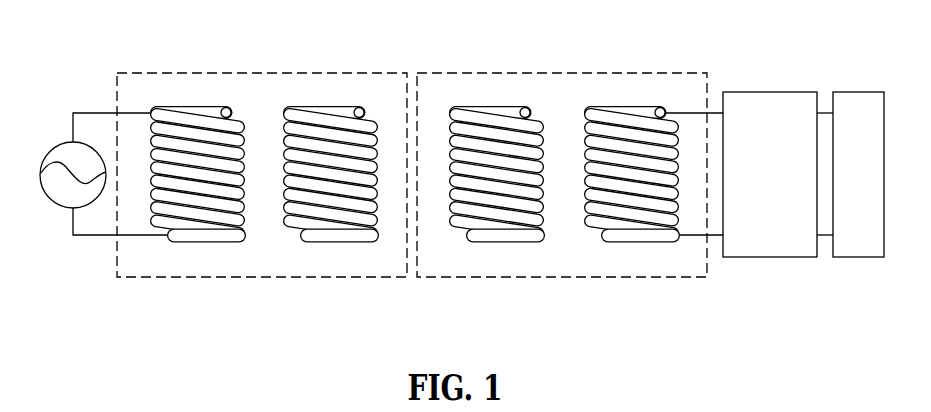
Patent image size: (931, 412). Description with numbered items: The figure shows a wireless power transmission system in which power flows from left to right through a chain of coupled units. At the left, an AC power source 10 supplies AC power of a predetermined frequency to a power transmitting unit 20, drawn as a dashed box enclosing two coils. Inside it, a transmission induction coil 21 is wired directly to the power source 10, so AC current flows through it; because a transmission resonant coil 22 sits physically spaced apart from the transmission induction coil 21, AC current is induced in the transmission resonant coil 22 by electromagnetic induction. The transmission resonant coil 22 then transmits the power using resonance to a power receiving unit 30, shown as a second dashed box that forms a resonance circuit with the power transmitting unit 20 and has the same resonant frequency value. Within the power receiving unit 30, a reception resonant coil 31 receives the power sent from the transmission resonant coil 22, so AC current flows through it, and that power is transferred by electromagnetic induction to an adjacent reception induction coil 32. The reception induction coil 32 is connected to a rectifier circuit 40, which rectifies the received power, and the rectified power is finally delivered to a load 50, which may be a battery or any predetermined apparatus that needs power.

The power source 10 is at (46, 142).
The power transmitting unit 20 is at (164, 72).
The transmission induction coil 21 is at (204, 122).
The transmission resonant coil 22 is at (333, 120).
The power receiving unit 30 is at (558, 72).
The reception resonant coil 31 is at (476, 118).
The reception induction coil 32 is at (616, 118).
The rectifier circuit 40 is at (768, 91).
The load 50 is at (858, 91).